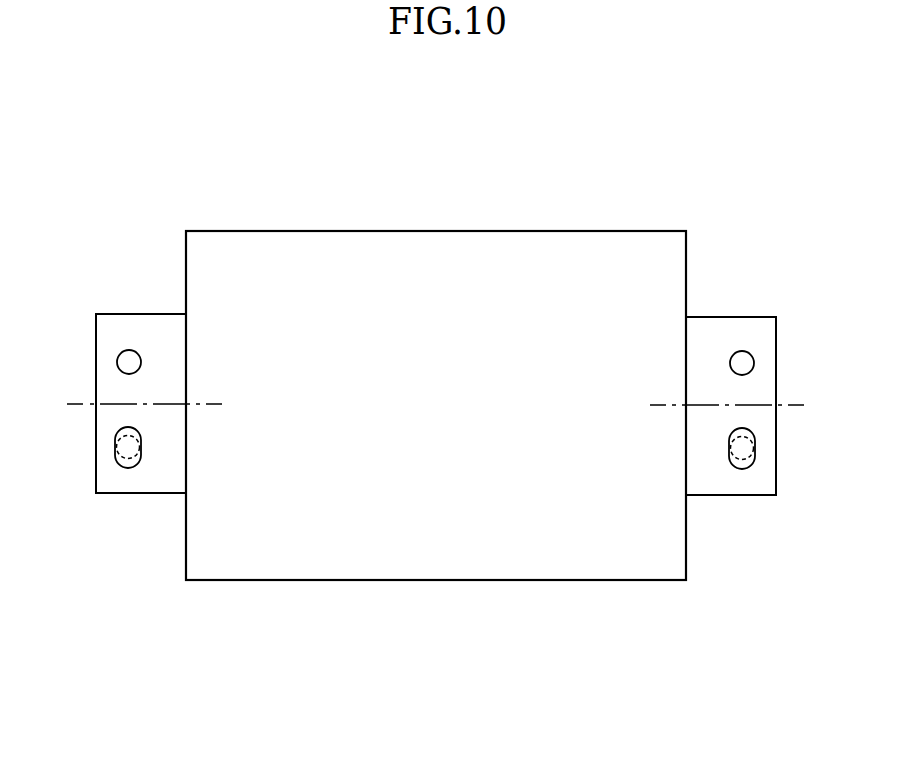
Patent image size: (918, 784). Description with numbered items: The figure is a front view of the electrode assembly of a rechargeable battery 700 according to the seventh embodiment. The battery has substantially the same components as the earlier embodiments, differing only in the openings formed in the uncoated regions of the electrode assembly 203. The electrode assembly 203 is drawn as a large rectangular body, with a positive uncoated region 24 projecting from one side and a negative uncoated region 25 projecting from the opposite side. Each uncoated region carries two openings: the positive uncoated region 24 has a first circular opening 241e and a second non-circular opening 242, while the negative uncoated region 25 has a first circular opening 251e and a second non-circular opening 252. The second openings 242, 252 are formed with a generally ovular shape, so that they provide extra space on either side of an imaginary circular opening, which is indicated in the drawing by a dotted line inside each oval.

The rechargeable battery 700 is at (492, 124).
The electrode assembly 203 is at (468, 587).
The positive uncoated region 24 is at (108, 378).
The first circular opening 241e is at (128, 350).
The second non-circular opening 242 is at (132, 468).
The negative uncoated region 25 is at (762, 381).
The first circular opening 251e is at (745, 351).
The second non-circular opening 252 is at (735, 470).